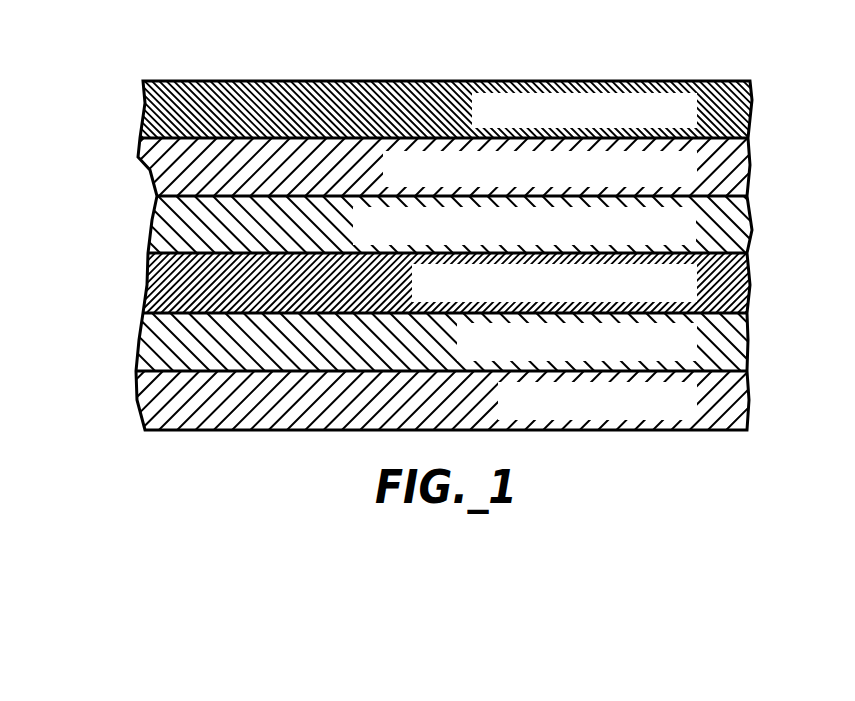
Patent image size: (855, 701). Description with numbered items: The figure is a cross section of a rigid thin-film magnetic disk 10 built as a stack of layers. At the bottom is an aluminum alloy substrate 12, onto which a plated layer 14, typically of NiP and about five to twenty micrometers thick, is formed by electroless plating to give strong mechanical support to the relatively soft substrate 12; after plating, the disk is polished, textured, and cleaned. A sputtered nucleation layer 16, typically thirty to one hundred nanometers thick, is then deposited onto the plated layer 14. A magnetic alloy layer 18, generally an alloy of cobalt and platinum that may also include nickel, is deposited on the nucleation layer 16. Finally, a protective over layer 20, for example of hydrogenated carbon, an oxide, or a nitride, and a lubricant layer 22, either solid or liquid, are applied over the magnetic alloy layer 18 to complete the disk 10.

The rigid thin-film magnetic disk 10 is at (118, 40).
The aluminum alloy substrate 12 is at (536, 413).
The plated layer 14 is at (495, 355).
The sputtered nucleation layer 16 is at (450, 296).
The magnetic alloy layer 18 is at (390, 238).
The protective over layer 20 is at (418, 181).
The lubricant layer 22 is at (518, 121).